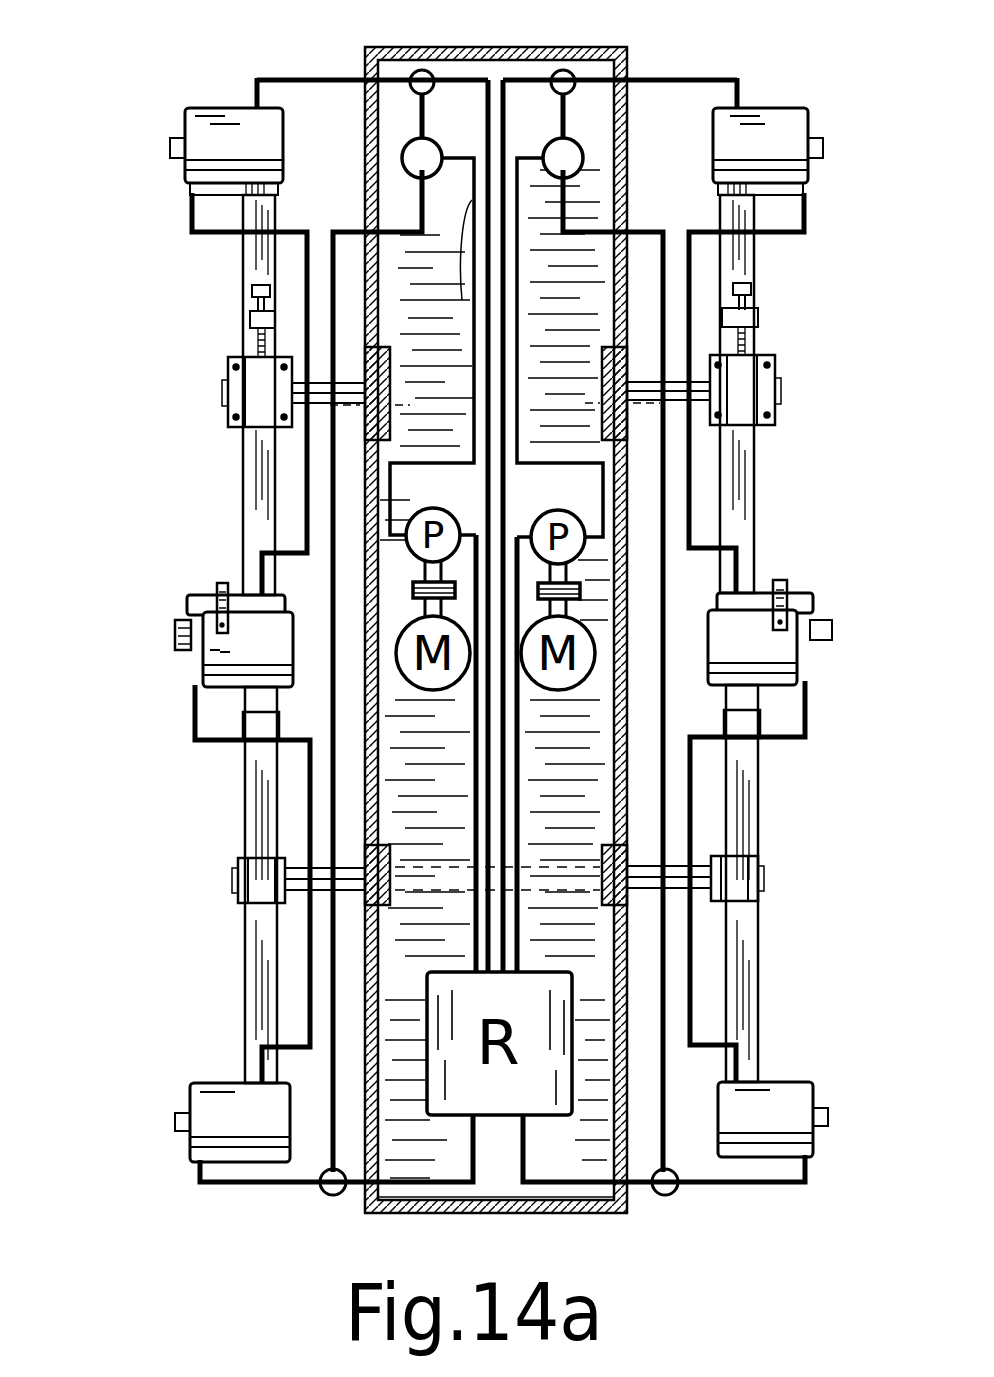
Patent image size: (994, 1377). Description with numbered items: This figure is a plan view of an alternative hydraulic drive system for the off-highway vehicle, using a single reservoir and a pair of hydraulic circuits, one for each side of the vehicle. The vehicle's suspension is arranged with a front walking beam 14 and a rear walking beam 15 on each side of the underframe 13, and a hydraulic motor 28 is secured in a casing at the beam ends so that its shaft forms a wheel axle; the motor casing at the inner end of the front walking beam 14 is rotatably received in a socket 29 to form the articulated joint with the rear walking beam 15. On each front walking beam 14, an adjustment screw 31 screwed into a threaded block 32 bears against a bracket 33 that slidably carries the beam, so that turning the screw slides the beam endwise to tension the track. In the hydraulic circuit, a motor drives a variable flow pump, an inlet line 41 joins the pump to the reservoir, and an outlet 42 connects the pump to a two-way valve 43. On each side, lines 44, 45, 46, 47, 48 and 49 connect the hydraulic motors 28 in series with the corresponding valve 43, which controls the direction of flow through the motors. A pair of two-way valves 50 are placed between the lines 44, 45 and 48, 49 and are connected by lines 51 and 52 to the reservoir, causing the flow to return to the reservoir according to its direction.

The underframe 13 is at (648, 1201).
The front walking beam 14 is at (243, 245).
The rear walking beam 15 is at (755, 787).
The hydraulic motor 28 is at (185, 125).
The socket 29 is at (200, 653).
The adjustment screw 31 is at (255, 292).
The threaded block 32 is at (258, 320).
The bracket 33 is at (228, 403).
The inlet line 41 is at (505, 795).
The outlet 42 is at (598, 205).
The two-way valve 43 is at (545, 142).
The line 44 is at (310, 585).
The line 45 is at (225, 1190).
The line 46 is at (288, 736).
The line 47 is at (192, 208).
The line 48 is at (258, 68).
The line 49 is at (365, 104).
The two-way valve 50 is at (305, 1182).
The line 51 is at (390, 1210).
The line 52 is at (500, 515).